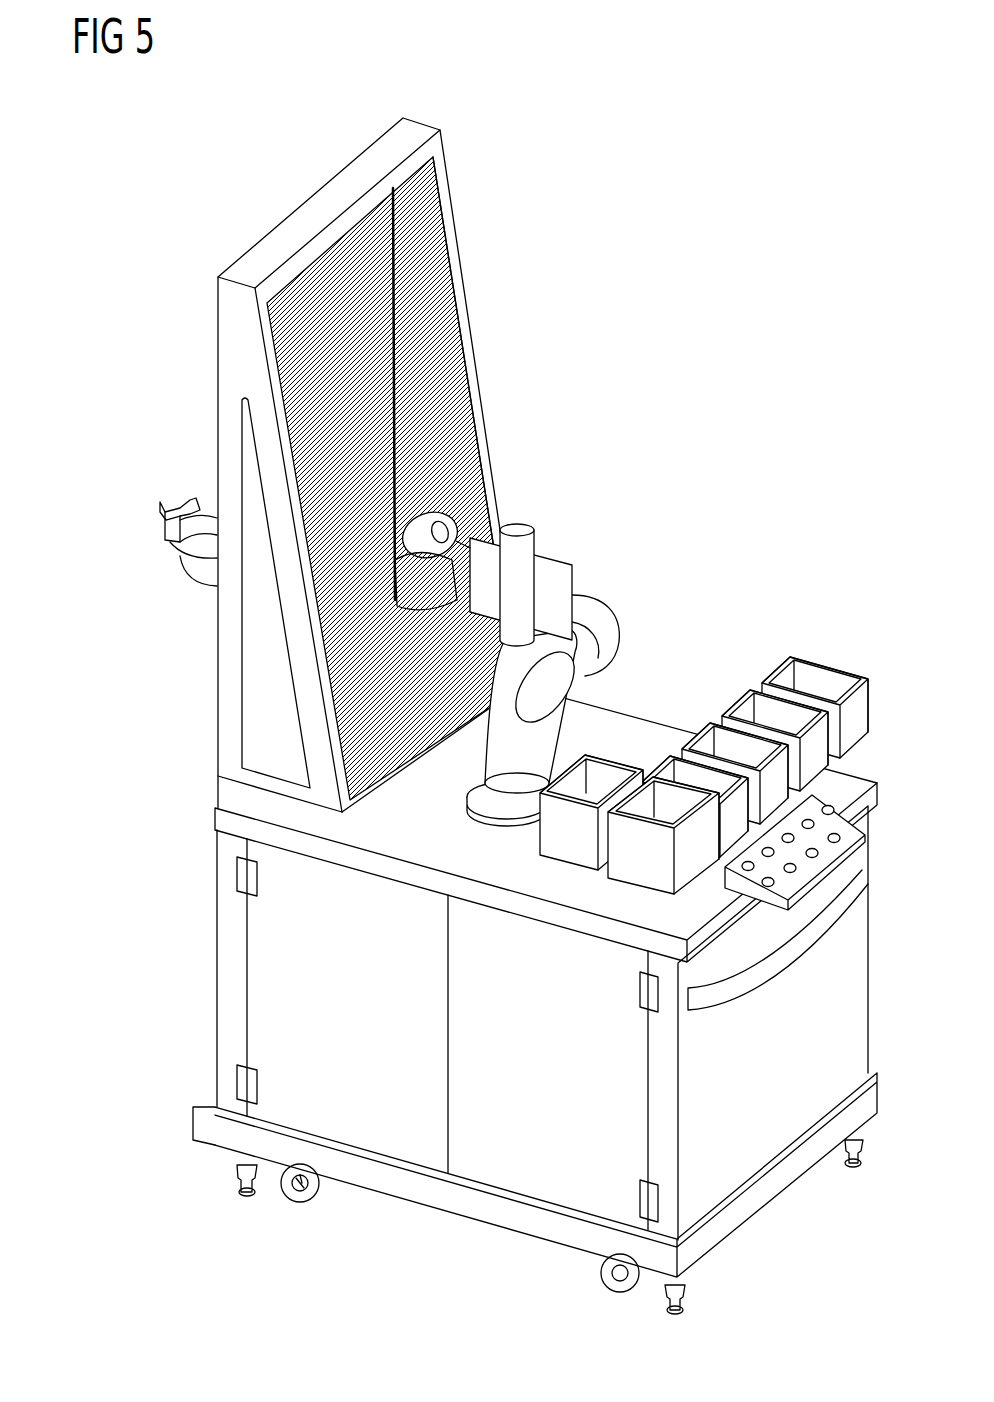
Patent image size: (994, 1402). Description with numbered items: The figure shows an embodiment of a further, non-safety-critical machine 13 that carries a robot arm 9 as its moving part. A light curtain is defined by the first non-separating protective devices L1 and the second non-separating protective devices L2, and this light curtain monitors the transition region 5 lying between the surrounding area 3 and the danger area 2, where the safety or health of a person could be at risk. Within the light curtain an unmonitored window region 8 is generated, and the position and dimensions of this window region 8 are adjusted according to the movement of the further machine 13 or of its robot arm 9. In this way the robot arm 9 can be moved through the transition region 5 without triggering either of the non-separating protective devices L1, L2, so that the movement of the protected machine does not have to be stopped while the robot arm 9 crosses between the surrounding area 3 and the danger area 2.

The danger area 2 is at (193, 372).
The surrounding area 3 is at (424, 837).
The transition region 5 is at (445, 376).
The window region 8 is at (440, 526).
The robot arm 9 is at (193, 563).
The further, non-safety-critical machine 13 is at (307, 110).
The first non-separating protective devices L1 is at (486, 285).
The second non-separating protective devices L2 is at (411, 130).